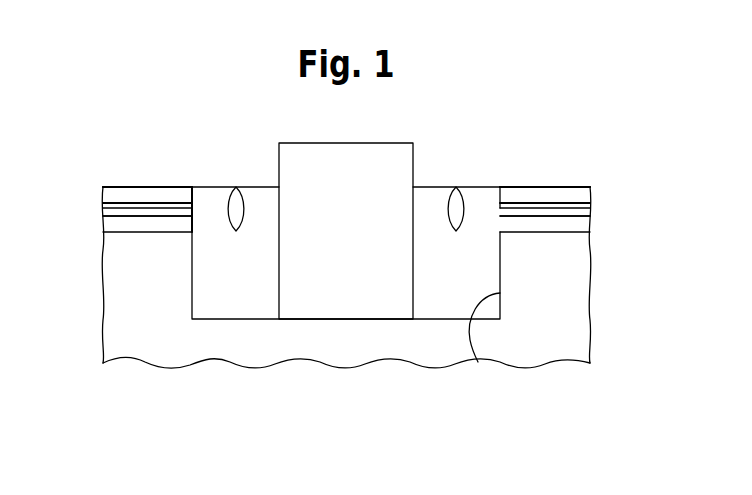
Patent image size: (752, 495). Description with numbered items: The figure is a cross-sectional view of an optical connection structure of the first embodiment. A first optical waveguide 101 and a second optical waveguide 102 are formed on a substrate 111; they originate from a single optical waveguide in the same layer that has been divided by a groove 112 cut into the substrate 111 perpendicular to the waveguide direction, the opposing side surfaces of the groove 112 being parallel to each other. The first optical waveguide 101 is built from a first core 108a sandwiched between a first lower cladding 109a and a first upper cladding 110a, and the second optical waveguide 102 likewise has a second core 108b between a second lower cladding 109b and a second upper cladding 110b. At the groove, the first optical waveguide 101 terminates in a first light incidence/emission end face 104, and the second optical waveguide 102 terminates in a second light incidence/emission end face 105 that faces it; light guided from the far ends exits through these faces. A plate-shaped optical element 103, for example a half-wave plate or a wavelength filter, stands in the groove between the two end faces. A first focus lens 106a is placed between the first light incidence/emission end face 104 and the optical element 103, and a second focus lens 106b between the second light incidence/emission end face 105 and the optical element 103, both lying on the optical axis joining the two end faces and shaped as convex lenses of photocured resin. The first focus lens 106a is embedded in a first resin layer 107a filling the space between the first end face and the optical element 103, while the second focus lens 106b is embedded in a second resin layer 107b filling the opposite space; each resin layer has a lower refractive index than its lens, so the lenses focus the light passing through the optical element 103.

The first optical waveguide 101 is at (116, 178).
The second optical waveguide 102 is at (576, 180).
The optical element 103 is at (347, 143).
The first light incidence/emission end face 104 is at (191, 207).
The second light incidence/emission end face 105 is at (501, 207).
The first focus lens 106a is at (236, 187).
The second focus lens 106b is at (456, 187).
The first resin layer 107a is at (198, 283).
The second resin layer 107b is at (492, 283).
The first core 108a is at (103, 212).
The second core 108b is at (591, 207).
The first lower cladding 109a is at (103, 225).
The second lower cladding 109b is at (591, 227).
The first upper cladding 110a is at (103, 196).
The second upper cladding 110b is at (591, 192).
The substrate 111 is at (585, 331).
The groove 112 is at (478, 362).